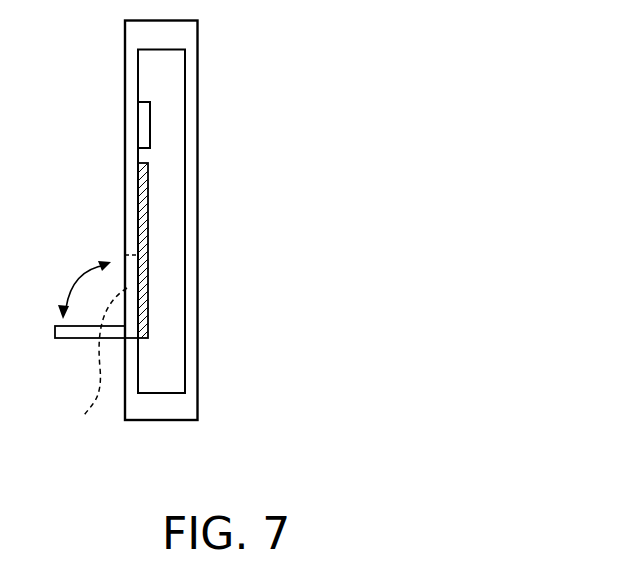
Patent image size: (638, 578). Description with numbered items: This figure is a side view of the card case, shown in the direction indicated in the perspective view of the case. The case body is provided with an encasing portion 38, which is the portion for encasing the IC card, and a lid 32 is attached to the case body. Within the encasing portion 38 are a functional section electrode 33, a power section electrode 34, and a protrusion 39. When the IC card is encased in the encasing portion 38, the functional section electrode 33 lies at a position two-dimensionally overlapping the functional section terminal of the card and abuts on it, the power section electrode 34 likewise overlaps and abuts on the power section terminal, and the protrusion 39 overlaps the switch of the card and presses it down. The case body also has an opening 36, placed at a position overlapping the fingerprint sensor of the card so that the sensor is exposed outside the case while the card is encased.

The encasing portion 38 is at (168, 67).
The protrusion 39 is at (150, 125).
The functional section electrode 33 is at (233, 256).
The power section electrode 34 is at (147, 188).
The lid 32 is at (62, 340).
The opening 36 is at (97, 368).